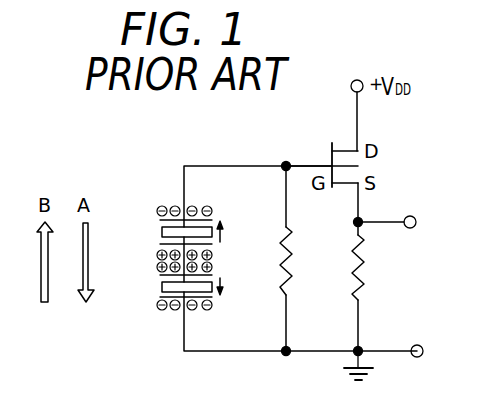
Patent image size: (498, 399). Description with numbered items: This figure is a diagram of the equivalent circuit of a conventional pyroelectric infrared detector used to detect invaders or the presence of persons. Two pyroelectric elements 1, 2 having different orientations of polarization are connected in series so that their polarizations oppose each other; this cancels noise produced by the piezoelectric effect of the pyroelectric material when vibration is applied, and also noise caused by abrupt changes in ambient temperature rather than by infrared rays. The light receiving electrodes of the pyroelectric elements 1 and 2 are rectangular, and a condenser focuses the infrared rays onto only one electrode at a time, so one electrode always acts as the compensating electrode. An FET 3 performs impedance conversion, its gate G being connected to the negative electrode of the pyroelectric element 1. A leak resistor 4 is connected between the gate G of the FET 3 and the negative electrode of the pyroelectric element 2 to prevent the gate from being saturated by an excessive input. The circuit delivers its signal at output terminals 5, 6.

The pyroelectric element 1 is at (162, 232).
The pyroelectric element 2 is at (162, 285).
The FET 3 is at (322, 153).
The leak resistor 4 is at (291, 244).
The output terminal 5 is at (411, 339).
The output terminal 6 is at (387, 210).